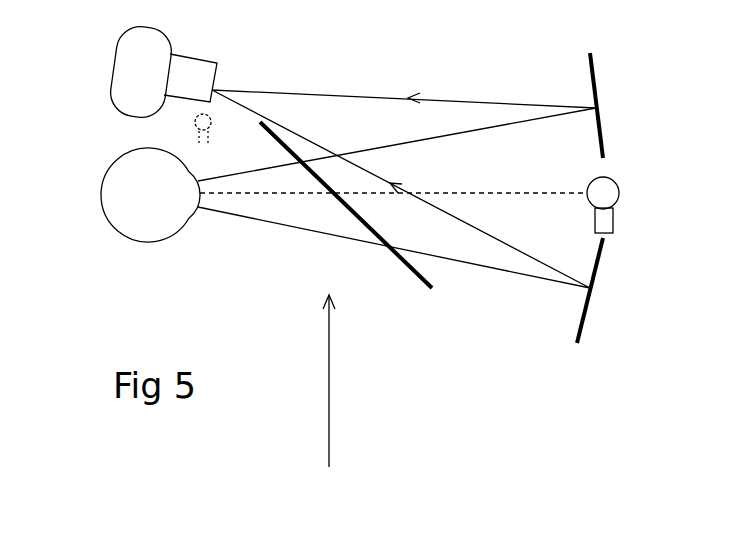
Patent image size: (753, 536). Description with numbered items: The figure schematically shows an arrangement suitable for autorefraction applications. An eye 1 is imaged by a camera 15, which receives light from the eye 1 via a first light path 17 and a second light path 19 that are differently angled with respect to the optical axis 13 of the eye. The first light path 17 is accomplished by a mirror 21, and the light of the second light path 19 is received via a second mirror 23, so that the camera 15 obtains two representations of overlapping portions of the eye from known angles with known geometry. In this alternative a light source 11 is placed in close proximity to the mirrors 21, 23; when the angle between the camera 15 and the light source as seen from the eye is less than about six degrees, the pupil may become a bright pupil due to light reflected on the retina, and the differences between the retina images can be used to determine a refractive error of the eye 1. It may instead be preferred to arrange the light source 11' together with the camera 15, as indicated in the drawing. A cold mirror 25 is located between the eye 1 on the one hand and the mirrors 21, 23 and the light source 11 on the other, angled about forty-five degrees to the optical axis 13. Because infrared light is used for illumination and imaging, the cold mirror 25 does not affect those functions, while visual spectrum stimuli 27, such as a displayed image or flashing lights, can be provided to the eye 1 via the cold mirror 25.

The eye 1 is at (115, 205).
The light source 11 is at (629, 188).
The light source 11' is at (228, 137).
The optical axis 13 is at (467, 195).
The camera 15 is at (127, 92).
The first light path 17 is at (325, 93).
The second light path 19 is at (515, 275).
The mirror 21 is at (596, 98).
The second mirror 23 is at (600, 267).
The cold mirror 25 is at (413, 272).
The visual spectrum stimuli 27 is at (329, 402).